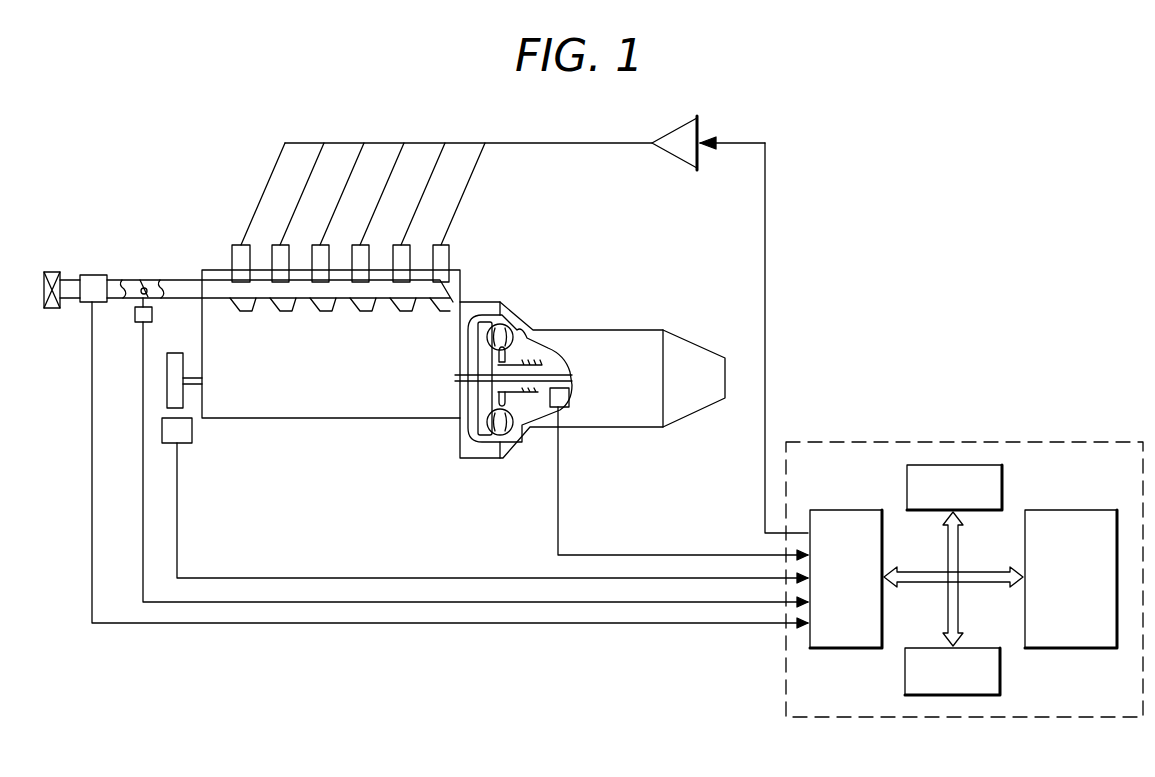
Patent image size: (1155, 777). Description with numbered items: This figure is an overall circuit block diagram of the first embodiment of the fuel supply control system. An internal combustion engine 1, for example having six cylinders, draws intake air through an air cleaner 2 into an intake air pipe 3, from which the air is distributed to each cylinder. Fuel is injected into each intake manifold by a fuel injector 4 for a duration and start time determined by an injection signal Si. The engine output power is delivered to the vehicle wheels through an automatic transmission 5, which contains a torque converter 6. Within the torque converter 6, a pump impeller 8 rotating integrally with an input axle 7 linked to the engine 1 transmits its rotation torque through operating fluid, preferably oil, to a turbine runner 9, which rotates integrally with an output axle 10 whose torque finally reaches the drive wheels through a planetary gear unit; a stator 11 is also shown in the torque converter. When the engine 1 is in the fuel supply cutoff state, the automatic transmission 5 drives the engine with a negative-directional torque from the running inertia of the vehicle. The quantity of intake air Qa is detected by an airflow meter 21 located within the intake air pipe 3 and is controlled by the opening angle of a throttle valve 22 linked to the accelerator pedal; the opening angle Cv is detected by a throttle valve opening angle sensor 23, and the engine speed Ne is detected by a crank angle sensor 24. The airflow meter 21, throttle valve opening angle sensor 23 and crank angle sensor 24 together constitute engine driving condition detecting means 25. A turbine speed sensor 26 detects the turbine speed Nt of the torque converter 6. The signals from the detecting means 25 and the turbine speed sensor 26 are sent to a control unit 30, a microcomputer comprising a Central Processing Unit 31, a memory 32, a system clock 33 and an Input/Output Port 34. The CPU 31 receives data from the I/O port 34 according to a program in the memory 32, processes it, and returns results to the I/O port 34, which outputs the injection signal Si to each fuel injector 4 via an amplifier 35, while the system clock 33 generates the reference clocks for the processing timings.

The internal combustion engine 1 is at (338, 427).
The air cleaner 2 is at (50, 309).
The intake air pipe 3 is at (186, 278).
The fuel injector 4 is at (399, 252).
The automatic transmission 5 is at (608, 323).
The torque converter 6 is at (533, 346).
The input axle 7 is at (465, 378).
The pump impeller 8 is at (511, 327).
The turbine runner 9 is at (487, 338).
The output axle 10 is at (560, 375).
The stator 11 is at (500, 395).
The airflow meter 21 is at (91, 275).
The throttle valve 22 is at (143, 282).
The throttle valve opening angle sensor 23 is at (153, 318).
The crank angle sensor 24 is at (193, 431).
The engine driving condition detecting means 25 is at (173, 232).
The turbine speed sensor 26 is at (571, 403).
The control unit 30 is at (1063, 432).
The Central Processing Unit 31 is at (1003, 473).
The memory 32 is at (1002, 683).
The system clock 33 is at (1100, 510).
The Input/Output Port 34 is at (823, 510).
The amplifier 35 is at (672, 131).